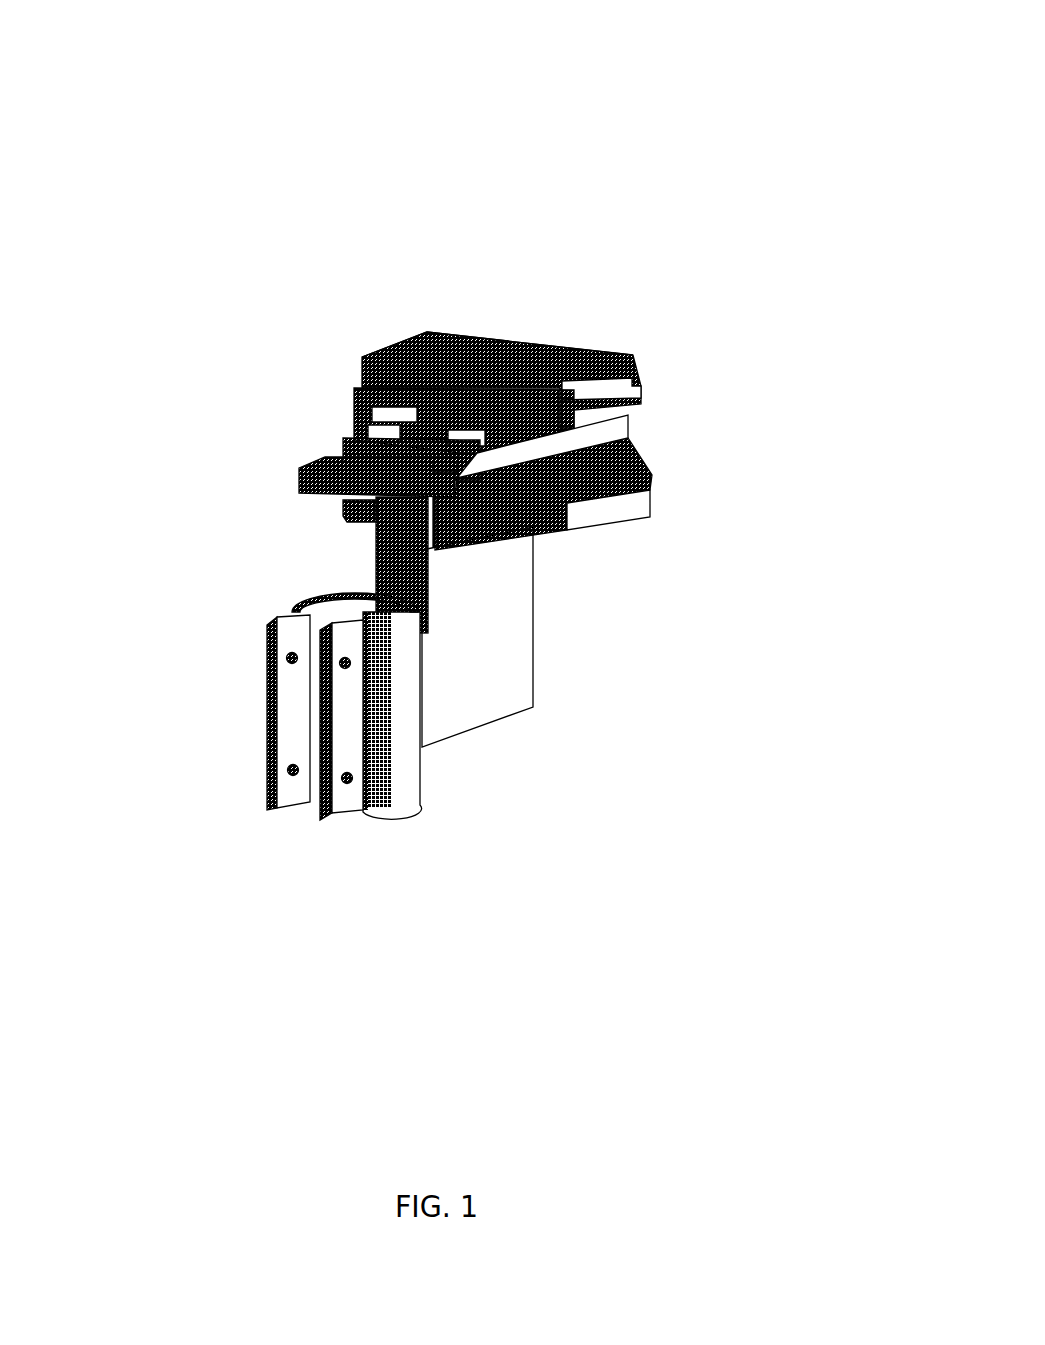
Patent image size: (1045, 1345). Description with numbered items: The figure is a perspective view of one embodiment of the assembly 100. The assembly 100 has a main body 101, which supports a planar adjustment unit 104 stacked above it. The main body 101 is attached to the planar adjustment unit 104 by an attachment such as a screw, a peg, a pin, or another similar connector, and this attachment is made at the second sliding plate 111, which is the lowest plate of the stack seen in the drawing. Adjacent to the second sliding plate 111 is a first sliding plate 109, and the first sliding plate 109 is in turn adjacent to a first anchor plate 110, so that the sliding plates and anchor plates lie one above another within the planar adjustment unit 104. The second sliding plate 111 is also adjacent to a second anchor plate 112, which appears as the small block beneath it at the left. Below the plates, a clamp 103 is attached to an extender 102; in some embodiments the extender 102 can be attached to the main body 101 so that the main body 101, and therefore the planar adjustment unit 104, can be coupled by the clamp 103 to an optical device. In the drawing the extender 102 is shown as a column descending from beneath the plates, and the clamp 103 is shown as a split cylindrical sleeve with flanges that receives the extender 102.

The assembly 100 is at (207, 117).
The main body 101 is at (537, 680).
The extender 102 is at (428, 687).
The clamp 103 is at (387, 807).
The planar adjustment unit 104 is at (672, 437).
The first sliding plate 109 is at (328, 458).
The first anchor plate 110 is at (345, 438).
The second sliding plate 111 is at (300, 482).
The second anchor plate 112 is at (345, 508).